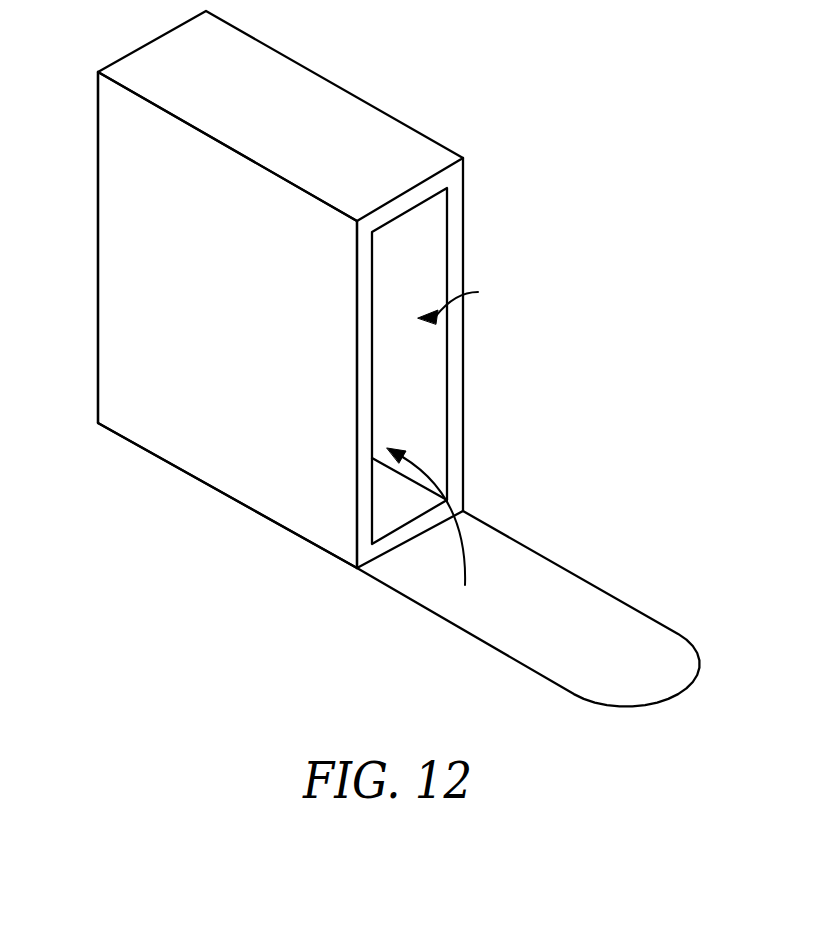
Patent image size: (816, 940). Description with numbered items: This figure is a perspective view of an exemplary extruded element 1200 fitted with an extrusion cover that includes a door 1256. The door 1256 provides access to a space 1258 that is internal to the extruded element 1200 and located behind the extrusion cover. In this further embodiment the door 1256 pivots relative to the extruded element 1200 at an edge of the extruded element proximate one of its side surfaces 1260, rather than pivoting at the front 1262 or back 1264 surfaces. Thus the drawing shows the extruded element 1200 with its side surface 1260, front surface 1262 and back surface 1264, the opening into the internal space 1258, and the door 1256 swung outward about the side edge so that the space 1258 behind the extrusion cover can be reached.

The extruded element 1200 is at (338, 93).
The door 1256 is at (547, 570).
The space 1258 is at (472, 301).
The side surface 1260 is at (260, 515).
The front surface 1262 is at (112, 271).
The back surface 1264 is at (463, 398).